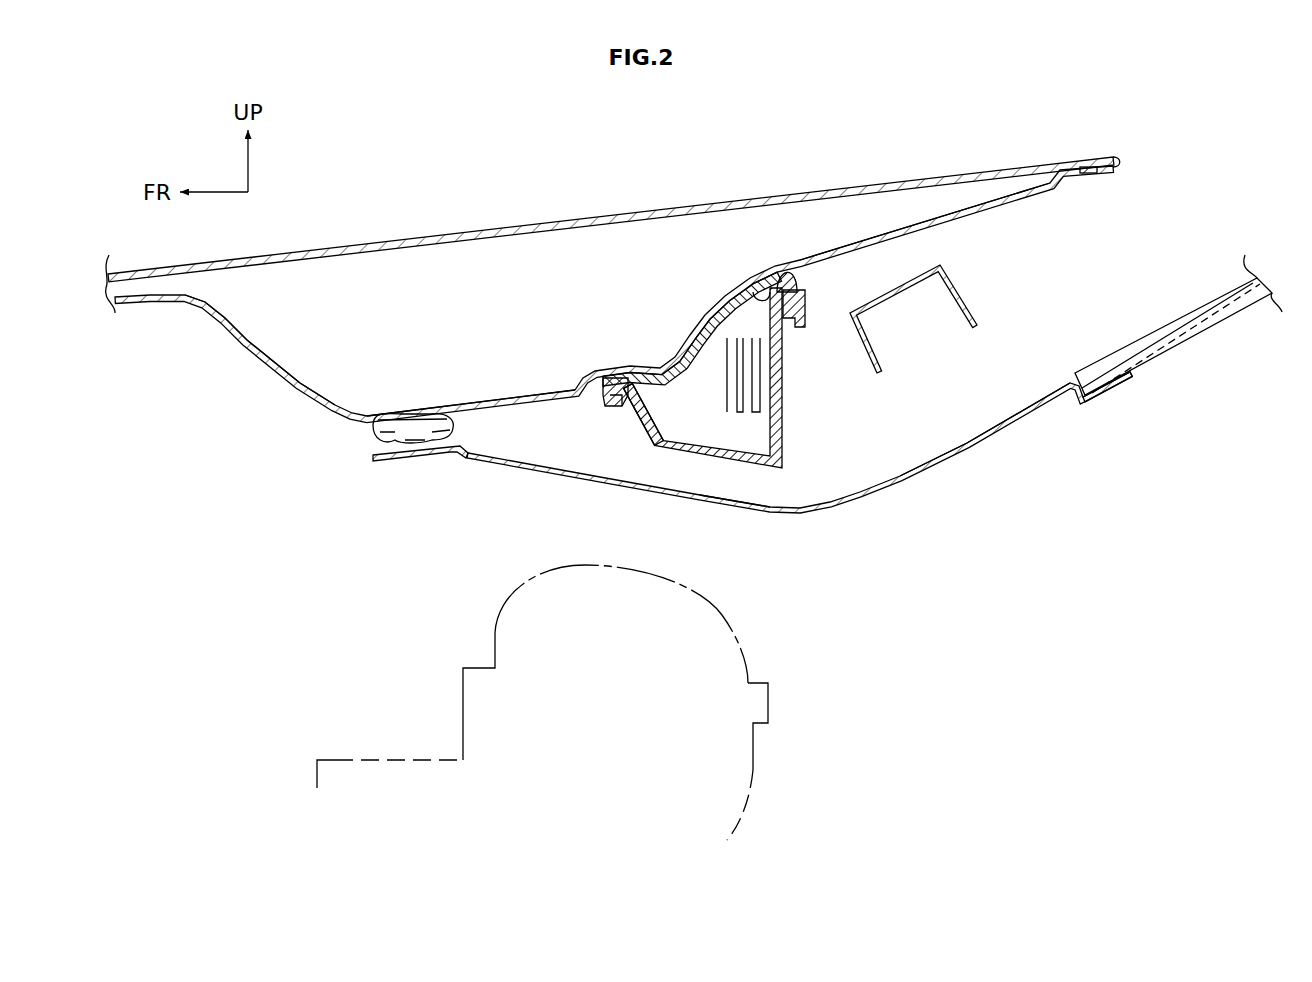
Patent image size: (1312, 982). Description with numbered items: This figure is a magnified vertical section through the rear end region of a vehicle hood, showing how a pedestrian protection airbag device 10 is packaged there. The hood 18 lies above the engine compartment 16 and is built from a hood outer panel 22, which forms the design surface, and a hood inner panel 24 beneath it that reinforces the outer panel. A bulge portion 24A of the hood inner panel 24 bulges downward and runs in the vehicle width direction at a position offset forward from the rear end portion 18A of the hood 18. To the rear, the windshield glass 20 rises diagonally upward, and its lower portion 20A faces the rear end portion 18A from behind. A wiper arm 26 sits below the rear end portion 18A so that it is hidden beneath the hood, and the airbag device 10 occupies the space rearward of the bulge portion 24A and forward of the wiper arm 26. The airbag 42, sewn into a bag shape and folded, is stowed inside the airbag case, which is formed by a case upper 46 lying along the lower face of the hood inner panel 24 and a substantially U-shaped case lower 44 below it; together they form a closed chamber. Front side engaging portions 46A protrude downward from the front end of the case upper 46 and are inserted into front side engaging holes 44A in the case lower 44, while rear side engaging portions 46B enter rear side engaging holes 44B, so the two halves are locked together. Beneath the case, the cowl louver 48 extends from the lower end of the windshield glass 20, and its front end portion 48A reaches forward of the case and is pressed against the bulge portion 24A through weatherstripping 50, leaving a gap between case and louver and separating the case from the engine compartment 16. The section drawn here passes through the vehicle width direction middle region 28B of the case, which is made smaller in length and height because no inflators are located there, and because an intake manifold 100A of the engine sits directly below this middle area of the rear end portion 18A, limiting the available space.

The pedestrian protection airbag device 10 is at (816, 469).
The engine compartment 16 is at (570, 532).
The hood 18 is at (344, 236).
The rear end portion of the hood 18A is at (878, 183).
The windshield glass 20 is at (1193, 311).
The lower portion of the windshield glass 20A is at (1138, 327).
The hood outer panel 22 is at (478, 230).
The hood inner panel 24 is at (243, 342).
The bulge portion 24A is at (510, 402).
The wiper arm 26 is at (968, 297).
The vehicle width direction middle region of the airbag case 28B is at (733, 467).
The airbag 42 is at (738, 333).
The case lower 44 is at (789, 442).
The front side engaging holes 44A is at (645, 368).
The rear side engaging holes 44B is at (780, 283).
The case upper 46 is at (672, 356).
The front side engaging portions 46A is at (615, 407).
The rear side engaging portions 46B is at (803, 322).
The cowl louver 48 is at (969, 441).
The front end portion of the cowl louver 48A is at (413, 458).
The weatherstripping 50 is at (373, 425).
The intake manifold 100A is at (770, 703).